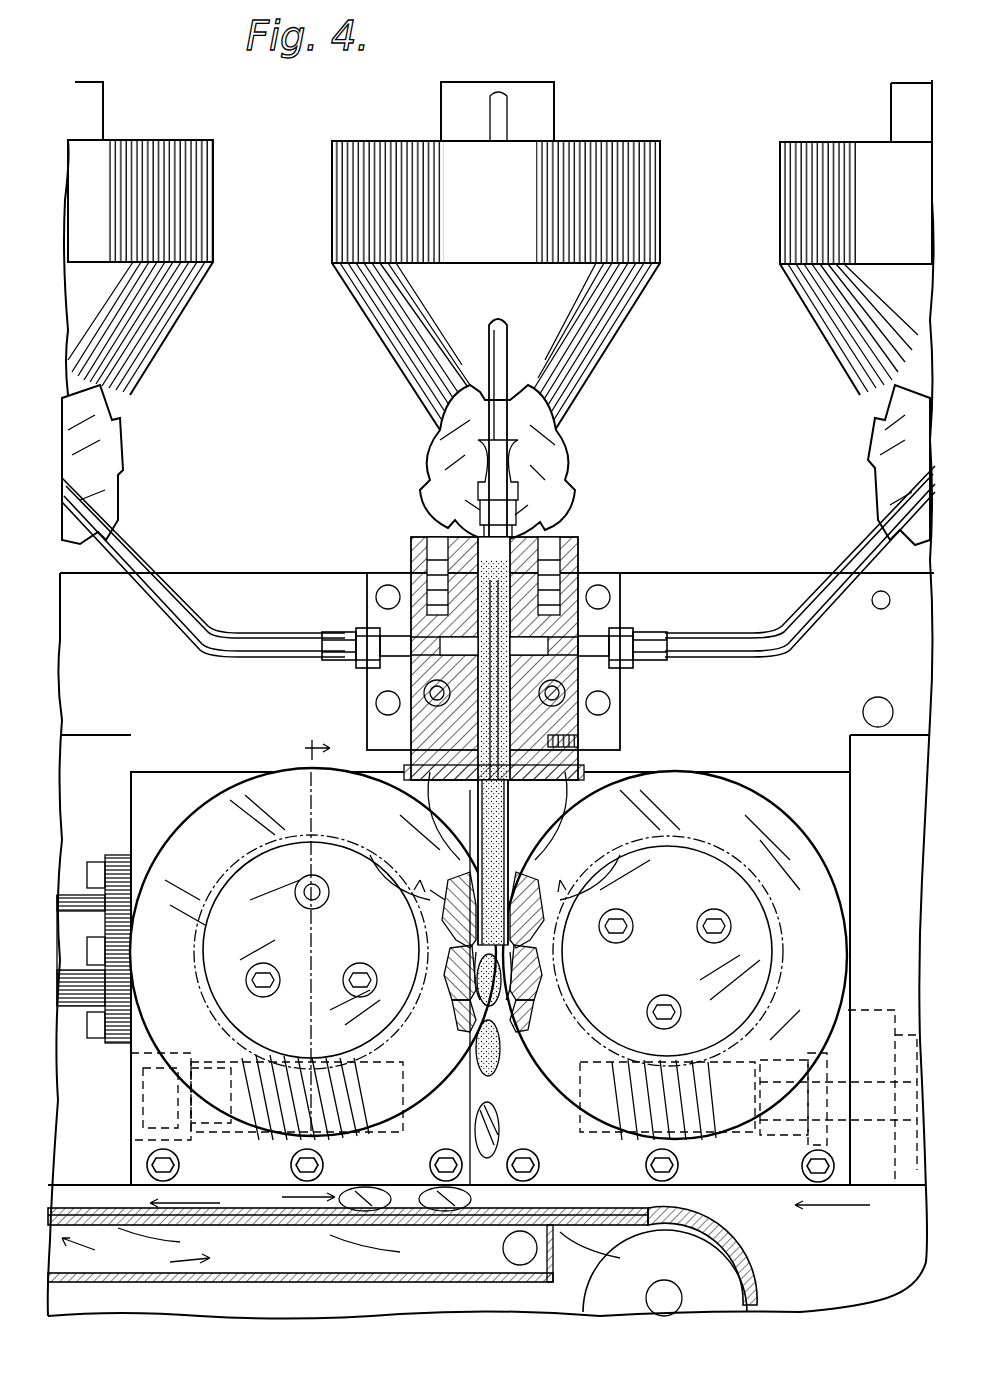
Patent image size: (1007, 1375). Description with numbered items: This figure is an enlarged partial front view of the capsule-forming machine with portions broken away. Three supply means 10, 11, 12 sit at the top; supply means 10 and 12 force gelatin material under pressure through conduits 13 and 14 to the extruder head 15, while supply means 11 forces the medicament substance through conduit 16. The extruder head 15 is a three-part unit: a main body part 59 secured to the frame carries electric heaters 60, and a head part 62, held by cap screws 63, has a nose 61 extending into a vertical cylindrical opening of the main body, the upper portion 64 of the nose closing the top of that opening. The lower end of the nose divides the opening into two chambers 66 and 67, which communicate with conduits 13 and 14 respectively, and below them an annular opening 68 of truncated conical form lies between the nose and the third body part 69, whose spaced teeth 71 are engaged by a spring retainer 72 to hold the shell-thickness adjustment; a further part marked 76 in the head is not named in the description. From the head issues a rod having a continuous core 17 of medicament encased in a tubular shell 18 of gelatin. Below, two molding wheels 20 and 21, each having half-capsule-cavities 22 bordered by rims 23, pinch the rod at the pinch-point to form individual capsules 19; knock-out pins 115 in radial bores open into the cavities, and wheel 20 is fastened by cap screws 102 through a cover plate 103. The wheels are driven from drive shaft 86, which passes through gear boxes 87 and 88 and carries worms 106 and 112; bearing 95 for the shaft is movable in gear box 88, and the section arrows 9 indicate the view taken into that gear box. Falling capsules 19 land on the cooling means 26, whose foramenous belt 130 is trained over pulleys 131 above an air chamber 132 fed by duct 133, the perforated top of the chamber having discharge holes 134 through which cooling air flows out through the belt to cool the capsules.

The section line 9 is at (300, 973).
The supply means 10 is at (140, 436).
The supply means 11 is at (572, 460).
The supply means 12 is at (850, 455).
The conduit 13 is at (158, 572).
The conduit 14 is at (858, 545).
The extruder head 15 is at (590, 535).
The conduit 16 is at (508, 355).
The continuous core 17 is at (498, 848).
The tubular shell 18 is at (506, 815).
The capsules 19 is at (494, 1125).
The molding wheel 20 is at (190, 845).
The molding wheel 21 is at (785, 835).
The half-capsule-cavities 22 is at (545, 990).
The rim 23 is at (470, 878).
The cooling means 26 is at (740, 1242).
The main body part 59 is at (585, 598).
The electric heaters 60 is at (440, 700).
The nose 61 is at (470, 705).
The head part 62 is at (582, 548).
The cap screws 63 is at (432, 540).
The upper portion 64 is at (560, 580).
The chamber 66 is at (465, 680).
The chamber 67 is at (558, 692).
The annular opening 68 is at (548, 745).
The third body part 69 is at (470, 800).
The spaced teeth 71 is at (420, 775).
The spring retainer 72 is at (600, 780).
The central passage 76 is at (485, 588).
The drive shaft 86 is at (552, 1150).
The gear box 87 is at (848, 828).
The gear box 88 is at (131, 786).
The bearing 95 is at (168, 1055).
The cap screws 102 is at (270, 963).
The cover plate 103 is at (291, 1010).
The worm 106 is at (260, 1145).
The worm 112 is at (695, 1140).
The knock-out pin 115 is at (462, 940).
The foramenous belt 130 is at (752, 1276).
The pulleys 131 is at (665, 1273).
The air chamber 132 is at (258, 1283).
The duct 133 is at (520, 1266).
The discharge holes 134 is at (426, 1234).